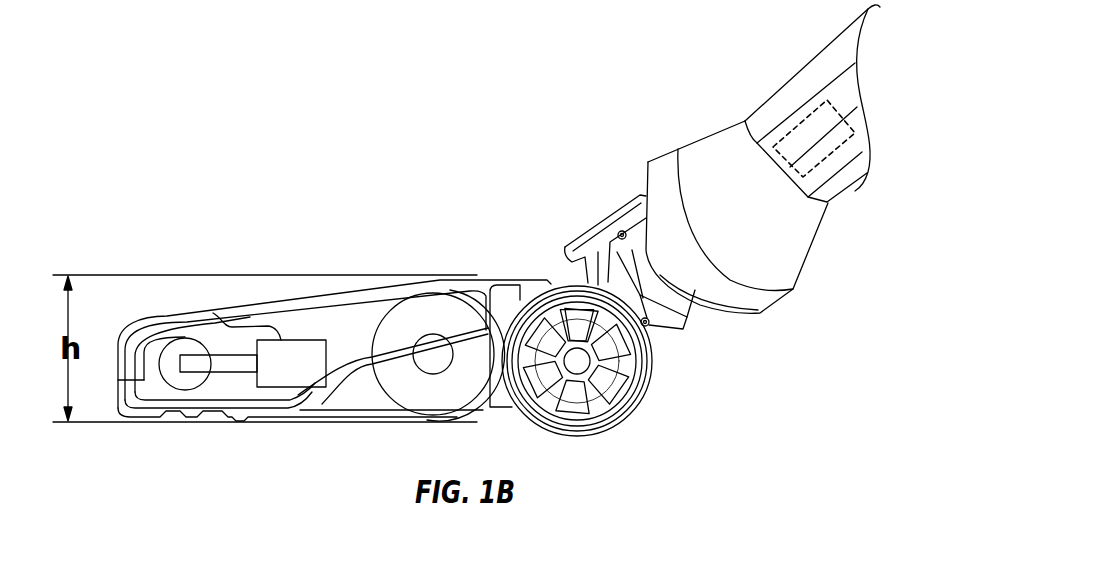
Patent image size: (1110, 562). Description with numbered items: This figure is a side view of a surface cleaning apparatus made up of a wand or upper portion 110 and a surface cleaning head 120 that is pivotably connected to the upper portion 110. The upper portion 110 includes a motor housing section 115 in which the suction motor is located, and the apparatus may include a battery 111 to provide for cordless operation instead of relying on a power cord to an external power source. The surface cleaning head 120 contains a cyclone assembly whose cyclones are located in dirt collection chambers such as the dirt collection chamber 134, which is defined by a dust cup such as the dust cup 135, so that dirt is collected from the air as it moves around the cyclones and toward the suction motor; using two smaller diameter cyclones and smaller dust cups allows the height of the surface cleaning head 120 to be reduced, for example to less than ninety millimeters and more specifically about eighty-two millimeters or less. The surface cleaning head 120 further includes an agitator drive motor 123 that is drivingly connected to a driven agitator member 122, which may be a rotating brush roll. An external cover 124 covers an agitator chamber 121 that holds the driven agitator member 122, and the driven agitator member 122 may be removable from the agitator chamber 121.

The upper portion 110 is at (722, 167).
The battery 111 is at (797, 122).
The motor housing section 115 is at (673, 140).
The surface cleaning head 120 is at (367, 334).
The agitator chamber 121 is at (158, 386).
The driven agitator member 122 is at (203, 348).
The agitator drive motor 123 is at (293, 340).
The external cover 124 is at (137, 337).
The dirt collection chamber 134 is at (433, 333).
The dust cup 135 is at (418, 312).